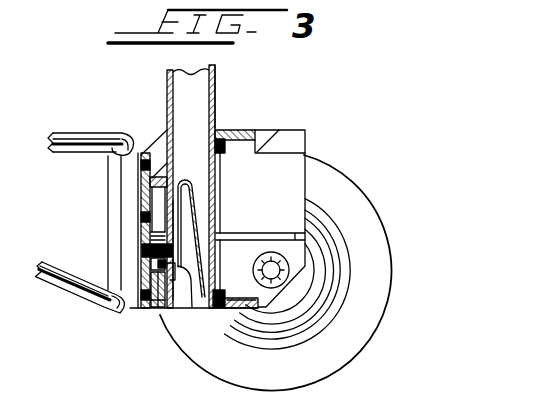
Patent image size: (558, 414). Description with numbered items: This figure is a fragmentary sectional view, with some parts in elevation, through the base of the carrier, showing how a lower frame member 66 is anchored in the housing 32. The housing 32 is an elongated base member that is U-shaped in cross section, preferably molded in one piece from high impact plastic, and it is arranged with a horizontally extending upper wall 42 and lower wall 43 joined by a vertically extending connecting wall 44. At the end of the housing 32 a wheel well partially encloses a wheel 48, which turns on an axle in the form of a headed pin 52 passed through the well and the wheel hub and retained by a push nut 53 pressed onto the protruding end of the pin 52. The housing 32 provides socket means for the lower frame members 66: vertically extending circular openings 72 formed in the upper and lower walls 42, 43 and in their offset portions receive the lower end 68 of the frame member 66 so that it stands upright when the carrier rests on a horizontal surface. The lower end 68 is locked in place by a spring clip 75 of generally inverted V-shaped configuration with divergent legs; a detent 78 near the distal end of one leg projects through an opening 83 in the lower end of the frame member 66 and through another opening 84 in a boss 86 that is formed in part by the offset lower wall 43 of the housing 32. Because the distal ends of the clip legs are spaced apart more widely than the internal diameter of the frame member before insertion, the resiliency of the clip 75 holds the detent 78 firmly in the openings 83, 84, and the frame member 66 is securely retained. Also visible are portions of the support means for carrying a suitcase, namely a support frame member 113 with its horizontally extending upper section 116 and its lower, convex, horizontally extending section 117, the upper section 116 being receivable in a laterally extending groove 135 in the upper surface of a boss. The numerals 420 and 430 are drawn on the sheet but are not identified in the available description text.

The housing 32 is at (281, 127).
The upper wall 42 is at (245, 132).
The flange bracket 420 is at (158, 176).
The lower wall 43 is at (233, 305).
The lower retainer 430 is at (155, 310).
The connecting wall 44 is at (145, 195).
The wheel 48 is at (358, 330).
The headed pin 52 is at (264, 265).
The push nut 53 is at (253, 283).
The lower frame member 66 is at (167, 108).
The lower end 68 is at (171, 310).
The opening 72 is at (216, 122).
The spring clip 75 is at (197, 197).
The detent 78 is at (150, 262).
The opening 83 is at (192, 308).
The opening 84 is at (152, 270).
The boss 86 is at (147, 248).
The support frame member 113 is at (60, 134).
The upper section 116 is at (94, 137).
The lower section 117 is at (82, 293).
The groove 135 is at (102, 229).